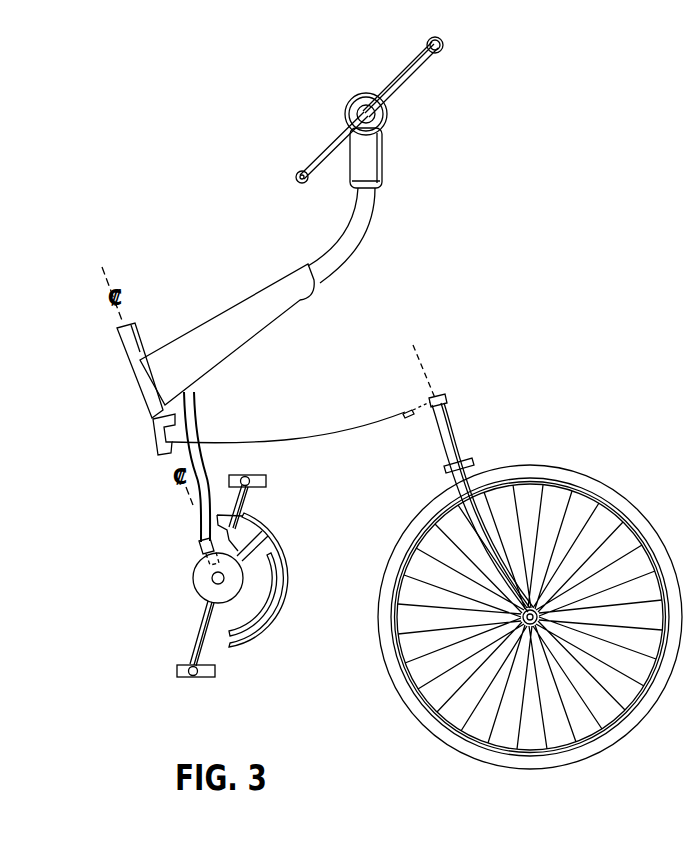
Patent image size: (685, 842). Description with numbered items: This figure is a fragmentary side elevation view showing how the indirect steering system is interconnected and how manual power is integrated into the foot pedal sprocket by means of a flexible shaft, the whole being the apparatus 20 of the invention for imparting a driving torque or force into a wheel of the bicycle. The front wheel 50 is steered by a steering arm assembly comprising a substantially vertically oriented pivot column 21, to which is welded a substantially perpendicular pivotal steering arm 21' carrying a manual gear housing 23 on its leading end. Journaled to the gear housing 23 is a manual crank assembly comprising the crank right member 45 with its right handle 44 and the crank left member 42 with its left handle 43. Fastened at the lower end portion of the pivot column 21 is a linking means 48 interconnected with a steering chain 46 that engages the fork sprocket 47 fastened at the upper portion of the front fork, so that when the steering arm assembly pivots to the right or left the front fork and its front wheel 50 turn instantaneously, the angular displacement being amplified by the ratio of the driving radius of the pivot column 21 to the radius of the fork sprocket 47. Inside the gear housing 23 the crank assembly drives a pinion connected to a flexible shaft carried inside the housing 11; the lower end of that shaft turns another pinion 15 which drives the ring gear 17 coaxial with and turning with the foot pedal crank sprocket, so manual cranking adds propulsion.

The housing 11 is at (196, 401).
The pinion 15 is at (207, 556).
The ring gear 17 is at (205, 587).
The apparatus 20 is at (472, 195).
The pivot column 21 is at (129, 389).
The pivotal steering arm 21' is at (364, 235).
The manual gear housing 23 is at (383, 146).
The crank left member 42 is at (326, 163).
The left handle 43 is at (298, 172).
The right handle 44 is at (443, 44).
The crank right member 45 is at (421, 66).
The steering chain 46 is at (413, 408).
The fork sprocket 47 is at (438, 397).
The linking means 48 is at (268, 442).
The front wheel 50 is at (585, 470).